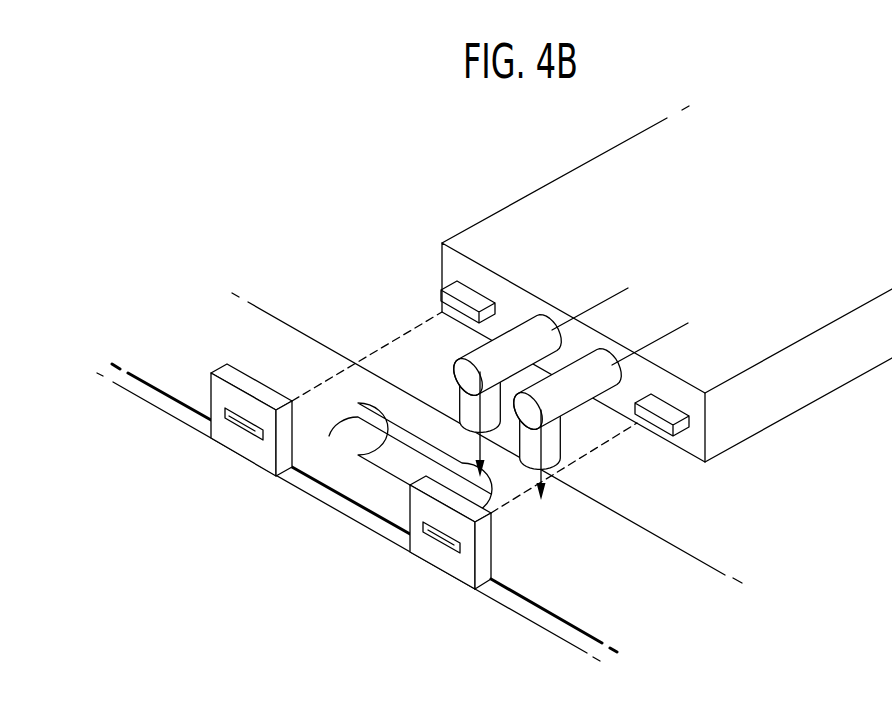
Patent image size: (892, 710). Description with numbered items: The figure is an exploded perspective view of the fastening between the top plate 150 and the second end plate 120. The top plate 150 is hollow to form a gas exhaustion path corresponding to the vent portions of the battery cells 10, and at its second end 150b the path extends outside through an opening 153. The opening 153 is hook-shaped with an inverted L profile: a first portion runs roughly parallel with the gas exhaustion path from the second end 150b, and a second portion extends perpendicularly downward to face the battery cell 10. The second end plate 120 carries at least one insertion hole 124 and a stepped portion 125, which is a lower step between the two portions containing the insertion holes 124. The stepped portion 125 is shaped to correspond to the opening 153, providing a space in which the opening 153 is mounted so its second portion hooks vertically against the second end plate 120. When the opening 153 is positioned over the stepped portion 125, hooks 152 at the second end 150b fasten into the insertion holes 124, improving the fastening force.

The battery cell 10 is at (607, 597).
The second end plate 120 is at (401, 607).
The insertion hole 124 is at (440, 538).
The stepped portion 125 is at (310, 487).
The top plate 150 is at (585, 215).
The second end of the top plate 150b is at (463, 247).
The hook 152 is at (460, 302).
The opening 153 is at (497, 432).